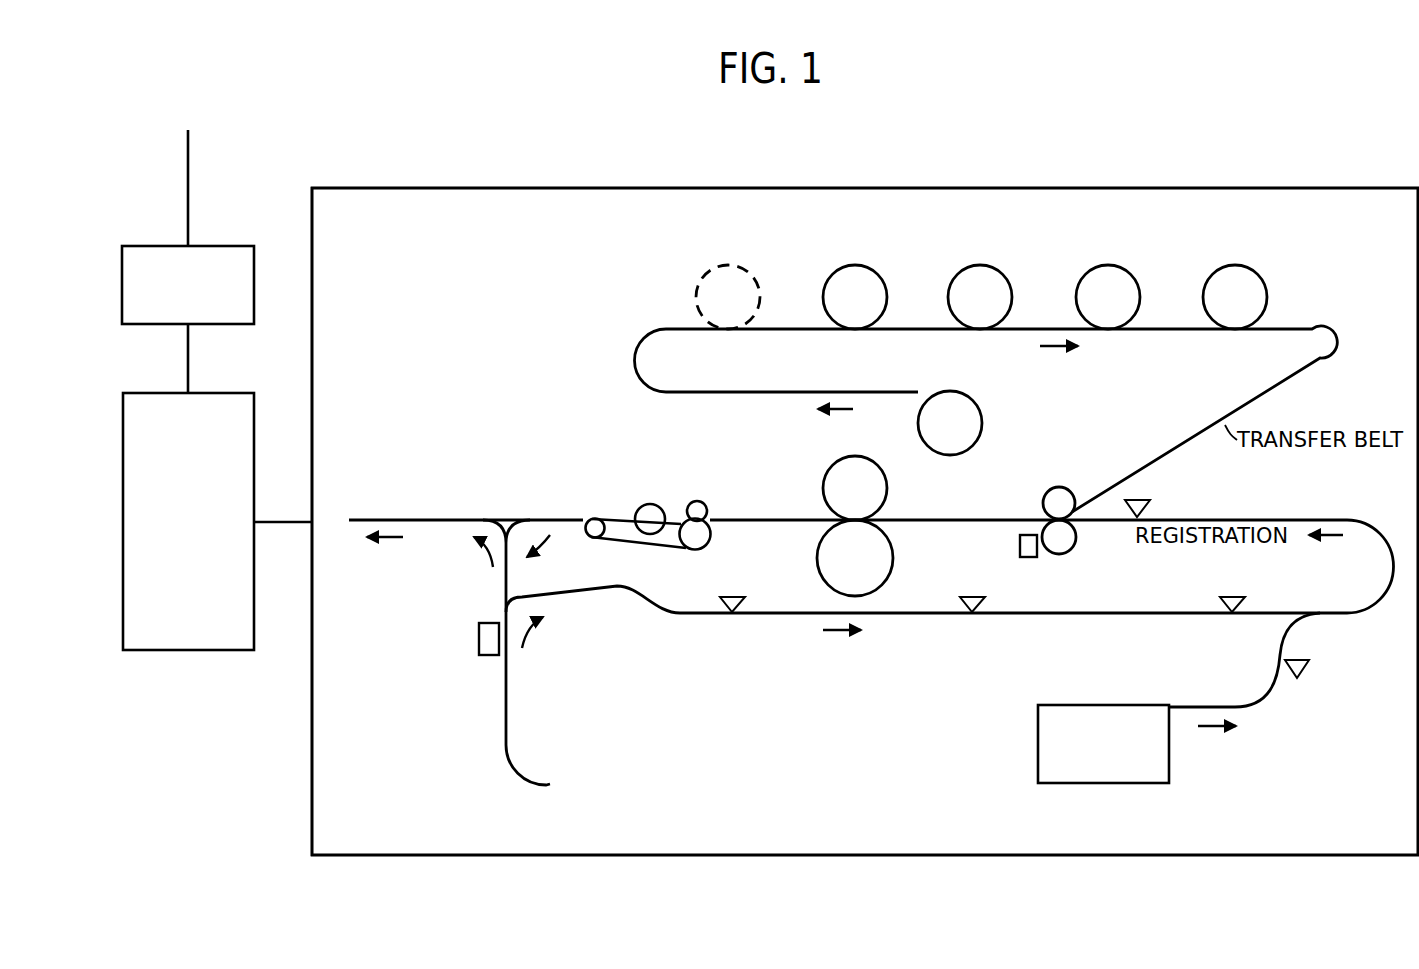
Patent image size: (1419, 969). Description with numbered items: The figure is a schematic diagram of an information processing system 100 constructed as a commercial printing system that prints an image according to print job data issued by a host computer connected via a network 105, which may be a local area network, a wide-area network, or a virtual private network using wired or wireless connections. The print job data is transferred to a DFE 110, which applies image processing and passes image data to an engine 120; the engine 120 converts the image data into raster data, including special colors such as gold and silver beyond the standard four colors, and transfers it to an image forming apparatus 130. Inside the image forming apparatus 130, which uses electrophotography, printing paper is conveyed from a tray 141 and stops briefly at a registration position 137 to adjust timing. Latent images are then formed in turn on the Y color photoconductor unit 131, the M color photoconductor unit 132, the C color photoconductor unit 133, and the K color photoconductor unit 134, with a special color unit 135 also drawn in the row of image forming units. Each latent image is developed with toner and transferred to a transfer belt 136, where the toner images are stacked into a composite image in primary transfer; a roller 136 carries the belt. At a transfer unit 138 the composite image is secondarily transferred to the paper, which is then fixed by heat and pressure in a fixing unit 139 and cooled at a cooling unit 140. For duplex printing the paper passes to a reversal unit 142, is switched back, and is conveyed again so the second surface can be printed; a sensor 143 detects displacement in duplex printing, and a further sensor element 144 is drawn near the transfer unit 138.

The information processing system 100 is at (1270, 173).
The network 105 is at (188, 182).
The DFE 110 is at (222, 246).
The engine 120 is at (223, 393).
The image forming apparatus 130 is at (1378, 188).
The Y color photoconductor unit 131 is at (853, 265).
The M color photoconductor unit 132 is at (978, 265).
The C color photoconductor unit 133 is at (1106, 265).
The K color photoconductor unit 134 is at (1233, 265).
The special color image forming unit 135 is at (740, 251).
The transfer belt 136 is at (1283, 329).
The registration position 137 is at (1148, 500).
The transfer unit 138 is at (1076, 541).
The fixing unit 139 is at (892, 565).
The cooling unit 140 is at (703, 547).
The tray 141 is at (1135, 705).
The reversal unit 142 is at (506, 680).
The sensor 143 is at (479, 641).
The sensor 144 is at (1020, 541).